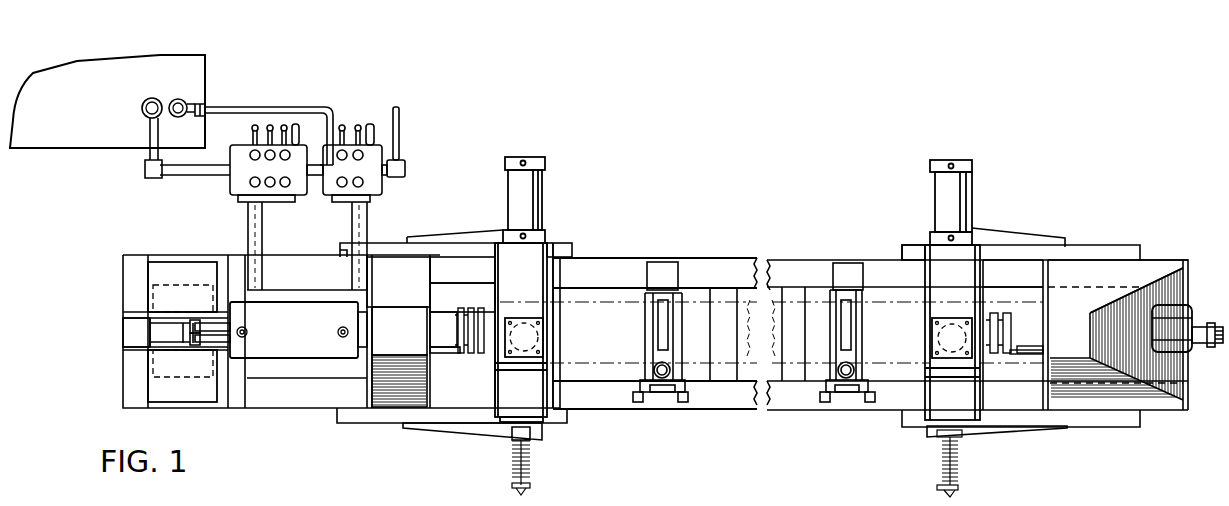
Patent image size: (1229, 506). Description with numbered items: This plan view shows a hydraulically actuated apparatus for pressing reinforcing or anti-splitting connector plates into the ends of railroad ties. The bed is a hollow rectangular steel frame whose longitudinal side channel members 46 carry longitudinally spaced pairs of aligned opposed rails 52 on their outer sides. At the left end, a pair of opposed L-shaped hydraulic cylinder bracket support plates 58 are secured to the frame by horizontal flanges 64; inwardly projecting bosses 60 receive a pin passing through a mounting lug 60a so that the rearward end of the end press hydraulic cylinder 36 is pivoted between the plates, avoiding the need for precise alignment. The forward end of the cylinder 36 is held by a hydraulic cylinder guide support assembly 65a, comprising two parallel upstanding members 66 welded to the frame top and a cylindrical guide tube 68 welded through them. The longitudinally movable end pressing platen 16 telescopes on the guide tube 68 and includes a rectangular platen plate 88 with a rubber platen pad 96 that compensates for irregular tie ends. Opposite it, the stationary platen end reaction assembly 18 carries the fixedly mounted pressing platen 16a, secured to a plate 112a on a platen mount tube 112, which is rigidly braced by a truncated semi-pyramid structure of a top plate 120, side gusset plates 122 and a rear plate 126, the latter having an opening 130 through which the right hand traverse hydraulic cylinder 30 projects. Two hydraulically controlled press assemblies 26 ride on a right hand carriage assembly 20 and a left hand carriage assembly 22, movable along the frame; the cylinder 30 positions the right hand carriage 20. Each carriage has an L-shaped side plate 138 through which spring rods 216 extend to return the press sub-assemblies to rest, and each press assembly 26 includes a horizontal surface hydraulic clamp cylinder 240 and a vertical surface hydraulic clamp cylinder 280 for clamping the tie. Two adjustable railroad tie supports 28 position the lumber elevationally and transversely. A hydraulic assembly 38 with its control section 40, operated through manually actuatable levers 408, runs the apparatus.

The hydraulic assembly 38 is at (77, 137).
The levers 408 is at (253, 128).
The control section 40 is at (328, 183).
The rails 52 is at (347, 250).
The horizontal flanges 64 is at (148, 270).
The hydraulic cylinder bracket support plates 58 is at (138, 340).
The mounting lug 60a is at (212, 323).
The bosses 60 is at (193, 343).
The end press hydraulic cylinder 36 is at (306, 339).
The hydraulic cylinder guide support assembly 65a is at (414, 341).
The upstanding members 66 is at (427, 277).
The guide tube 68 is at (443, 307).
The platen plate 88 is at (465, 313).
The rubber platen pad 96 is at (478, 317).
The longitudinally movable end pressing platen 16 is at (465, 360).
The horizontal surface hydraulic clamp cylinder 240 is at (527, 357).
The vertical surface hydraulic clamp cylinder 280 is at (497, 199).
The press assemblies 26 is at (560, 243).
The side channel members 46 is at (602, 268).
The adjustable railroad tie supports 28 is at (682, 370).
The left hand carriage assembly 22 is at (555, 388).
The side plate 138 is at (475, 425).
The spring rods 216 is at (528, 472).
The fixedly mounted pressing platen 16a is at (1013, 273).
The top plate 120 is at (1067, 310).
The side gusset plates 122 is at (1133, 278).
The rear plate 126 is at (1150, 290).
The opening 130 is at (1182, 322).
The right hand traverse hydraulic cylinder 30 is at (1180, 350).
The platen mount tube 112 is at (1028, 335).
The plate 112a is at (1003, 354).
The stationary platen end reaction assembly 18 is at (1032, 358).
The right hand carriage assembly 20 is at (908, 432).